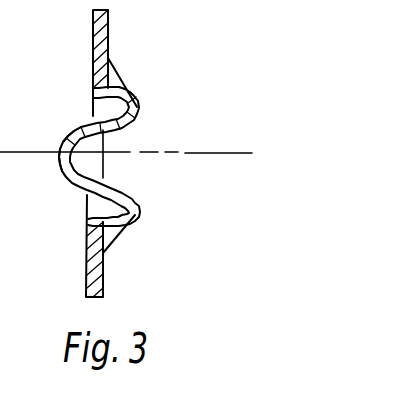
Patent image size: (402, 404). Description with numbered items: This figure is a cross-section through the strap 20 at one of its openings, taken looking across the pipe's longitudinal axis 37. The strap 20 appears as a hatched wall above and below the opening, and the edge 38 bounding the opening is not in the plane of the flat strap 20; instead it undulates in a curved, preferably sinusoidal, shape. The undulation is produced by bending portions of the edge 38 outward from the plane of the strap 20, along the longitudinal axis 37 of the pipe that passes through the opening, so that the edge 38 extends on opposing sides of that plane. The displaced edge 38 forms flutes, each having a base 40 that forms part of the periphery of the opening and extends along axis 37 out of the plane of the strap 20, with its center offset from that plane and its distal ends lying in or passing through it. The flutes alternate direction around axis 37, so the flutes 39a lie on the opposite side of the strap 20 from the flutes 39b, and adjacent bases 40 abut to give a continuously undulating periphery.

The strap 20 is at (109, 29).
The longitudinal axis 37 is at (205, 155).
The edge 38 is at (131, 129).
The flutes 39a is at (77, 130).
The flutes 39b is at (136, 101).
The base 40 is at (64, 180).